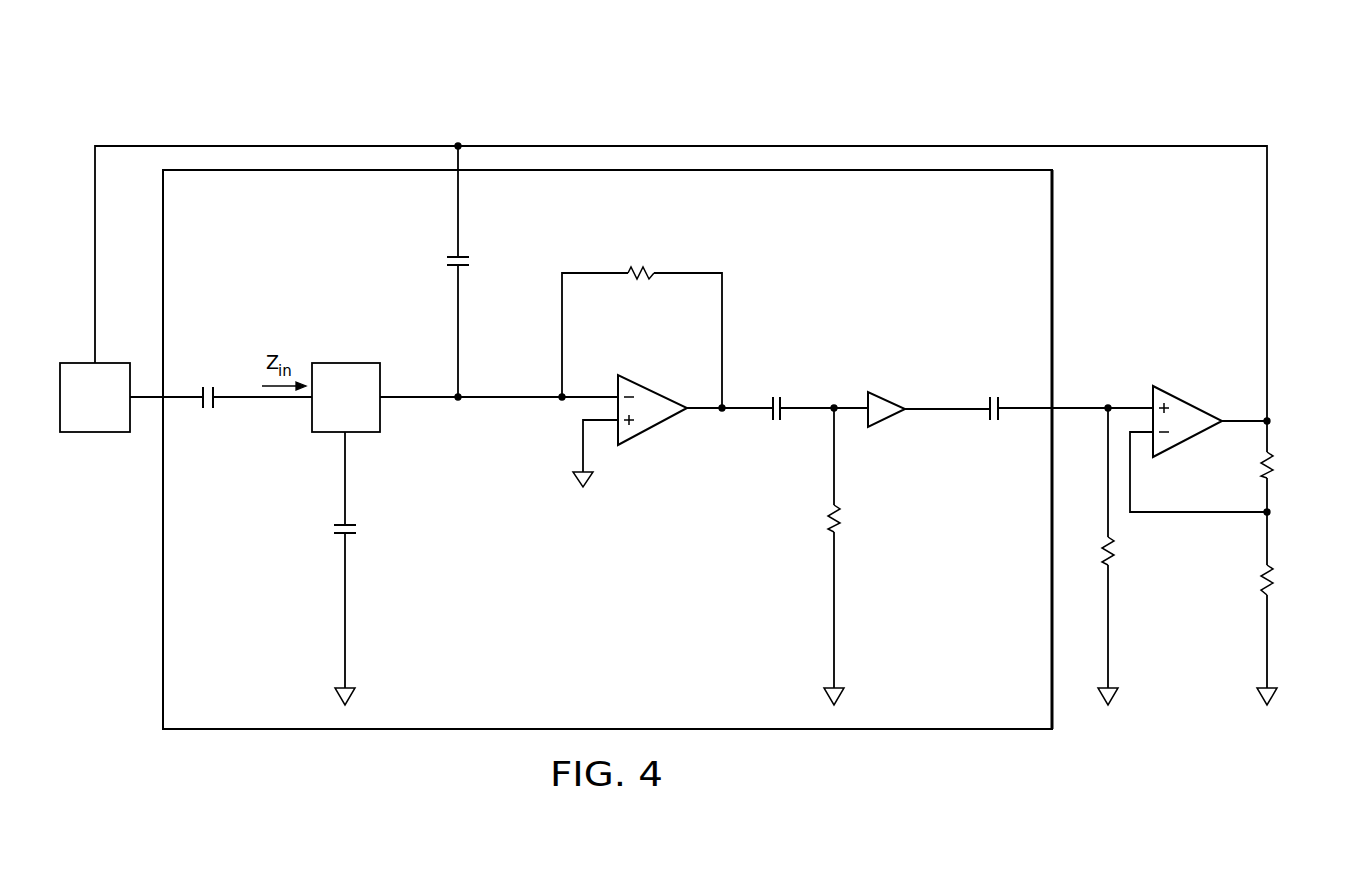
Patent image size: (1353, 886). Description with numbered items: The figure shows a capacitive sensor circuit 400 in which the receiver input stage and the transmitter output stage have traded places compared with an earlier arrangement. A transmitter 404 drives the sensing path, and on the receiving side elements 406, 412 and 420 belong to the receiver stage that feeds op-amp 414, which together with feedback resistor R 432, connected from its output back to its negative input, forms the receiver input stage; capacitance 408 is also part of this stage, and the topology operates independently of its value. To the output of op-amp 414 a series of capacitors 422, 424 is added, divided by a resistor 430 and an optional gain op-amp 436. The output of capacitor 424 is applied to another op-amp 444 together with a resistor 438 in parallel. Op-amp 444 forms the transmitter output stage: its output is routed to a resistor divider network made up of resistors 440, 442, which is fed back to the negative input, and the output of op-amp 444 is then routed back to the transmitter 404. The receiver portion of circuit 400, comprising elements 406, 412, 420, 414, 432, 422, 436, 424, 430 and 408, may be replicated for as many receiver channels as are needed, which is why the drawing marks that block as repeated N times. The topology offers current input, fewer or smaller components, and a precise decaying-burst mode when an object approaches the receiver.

The circuit 400 is at (400, 90).
The transmitter TX 404 is at (72, 362).
The receiver stage element 406 is at (207, 411).
The capacitor C0 408 is at (333, 530).
The receiver stage element 412 is at (335, 362).
The op-amp 414 is at (652, 390).
The receiver stage element 420 is at (470, 262).
The capacitor 422 is at (778, 422).
The capacitor 424 is at (993, 422).
The resistor 430 is at (840, 520).
The feedback resistor R 432 is at (650, 279).
The optional gain op-amp 436 is at (884, 398).
The resistor 438 is at (1112, 552).
The resistor Rf 440 is at (1272, 467).
The resistor RA 442 is at (1272, 582).
The op-amp 444 is at (1188, 406).